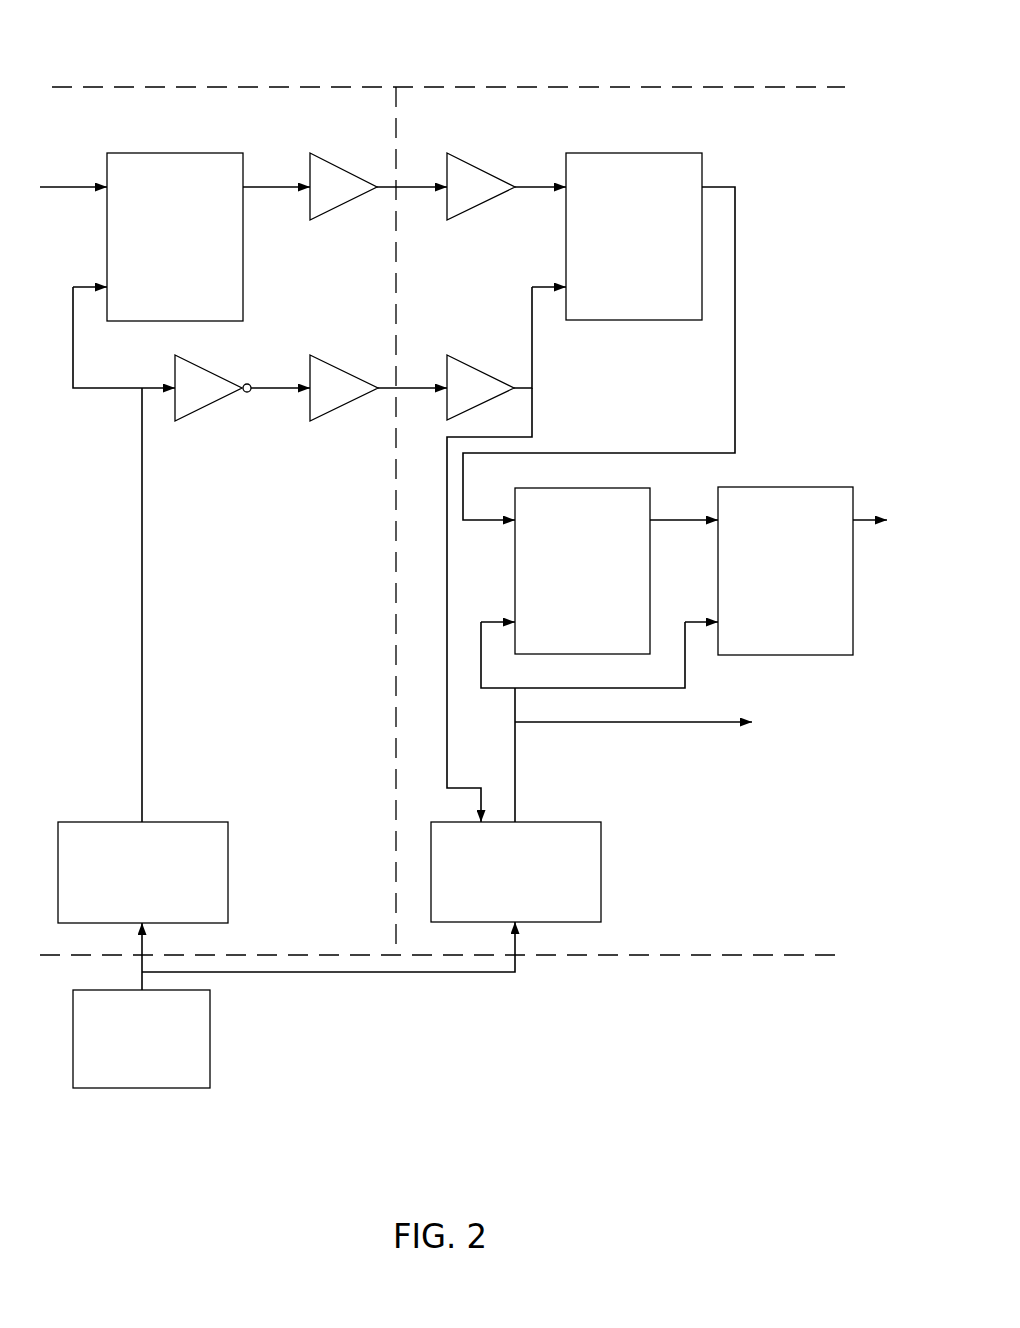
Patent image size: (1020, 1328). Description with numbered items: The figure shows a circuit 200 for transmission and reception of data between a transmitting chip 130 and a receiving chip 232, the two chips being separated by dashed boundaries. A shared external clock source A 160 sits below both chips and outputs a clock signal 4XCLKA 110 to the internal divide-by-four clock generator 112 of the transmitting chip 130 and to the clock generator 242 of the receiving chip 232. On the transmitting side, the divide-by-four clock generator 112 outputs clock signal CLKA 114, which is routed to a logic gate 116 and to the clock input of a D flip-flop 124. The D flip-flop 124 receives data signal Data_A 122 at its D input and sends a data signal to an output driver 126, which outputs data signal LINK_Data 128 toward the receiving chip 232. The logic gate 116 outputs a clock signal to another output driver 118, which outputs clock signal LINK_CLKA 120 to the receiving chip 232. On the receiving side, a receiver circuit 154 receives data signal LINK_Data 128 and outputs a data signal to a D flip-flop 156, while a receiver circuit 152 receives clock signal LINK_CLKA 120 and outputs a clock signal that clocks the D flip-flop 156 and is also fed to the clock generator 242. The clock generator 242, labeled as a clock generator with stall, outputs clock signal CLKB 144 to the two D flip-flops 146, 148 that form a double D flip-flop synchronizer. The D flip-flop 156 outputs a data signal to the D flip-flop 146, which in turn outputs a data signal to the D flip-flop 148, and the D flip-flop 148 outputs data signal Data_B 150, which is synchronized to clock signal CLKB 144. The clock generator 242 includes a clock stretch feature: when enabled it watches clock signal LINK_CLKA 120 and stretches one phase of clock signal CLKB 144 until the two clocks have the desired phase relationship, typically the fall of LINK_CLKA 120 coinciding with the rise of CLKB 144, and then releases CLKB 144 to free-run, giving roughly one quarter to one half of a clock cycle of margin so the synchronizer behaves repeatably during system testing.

The data transmission system 200 is at (310, 34).
The transmitting chip 130 is at (210, 86).
The receiving chip 232 is at (633, 86).
The data signal Data_A 122 is at (73, 174).
The D flip-flop 124 is at (243, 237).
The output driver 126 is at (345, 205).
The data signal LINK_Data 128 is at (377, 184).
The receiver circuit 154 is at (499, 152).
The D flip-flop 156 is at (668, 152).
The logic gate 116 is at (210, 405).
The output driver 118 is at (345, 406).
The clock signal LINK_CLKA 120 is at (393, 388).
The receiver circuit 152 is at (497, 337).
The clock signal CLKA 114 is at (143, 655).
The divide-by-four clock generator 112 is at (158, 822).
The clock signal 4XCLKA 110 is at (312, 975).
The external clock source A 160 is at (210, 1078).
The D flip-flop 146 is at (633, 488).
The D flip-flop 148 is at (820, 487).
The data signal Data_B 150 is at (878, 535).
The clock signal CLKB 144 is at (515, 730).
The clock generator 242 is at (565, 820).